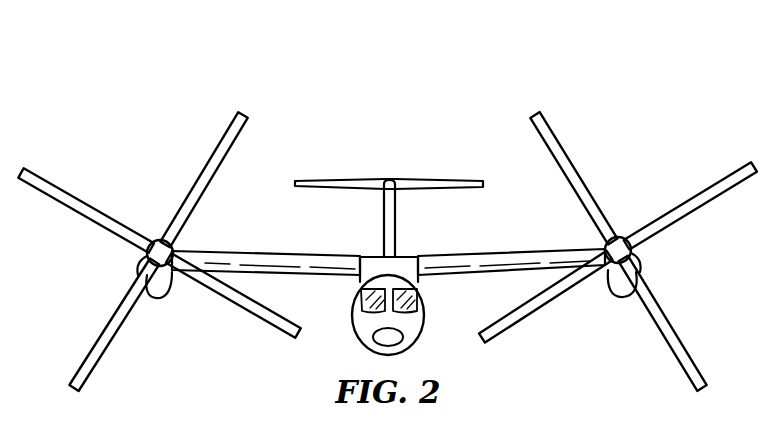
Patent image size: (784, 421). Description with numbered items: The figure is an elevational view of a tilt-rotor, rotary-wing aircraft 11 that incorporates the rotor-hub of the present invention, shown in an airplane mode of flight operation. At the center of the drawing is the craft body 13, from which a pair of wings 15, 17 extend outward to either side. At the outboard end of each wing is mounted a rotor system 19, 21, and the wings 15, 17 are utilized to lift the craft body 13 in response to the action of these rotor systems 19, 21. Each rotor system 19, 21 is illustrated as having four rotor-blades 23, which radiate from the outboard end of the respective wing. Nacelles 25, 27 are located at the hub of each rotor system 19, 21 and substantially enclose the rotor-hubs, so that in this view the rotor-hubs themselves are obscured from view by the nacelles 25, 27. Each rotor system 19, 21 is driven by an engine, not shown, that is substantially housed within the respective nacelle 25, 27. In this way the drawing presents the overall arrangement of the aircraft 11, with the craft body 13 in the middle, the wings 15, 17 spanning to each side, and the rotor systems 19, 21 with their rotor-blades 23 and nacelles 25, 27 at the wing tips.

The tilt-rotor aircraft 11 is at (302, 118).
The craft body 13 is at (427, 309).
The wing 15 is at (265, 250).
The wing 17 is at (515, 253).
The rotor system 19 is at (125, 156).
The rotor system 21 is at (653, 153).
The rotor-blades 23 is at (212, 156).
The nacelle 25 is at (153, 240).
The nacelle 27 is at (627, 238).